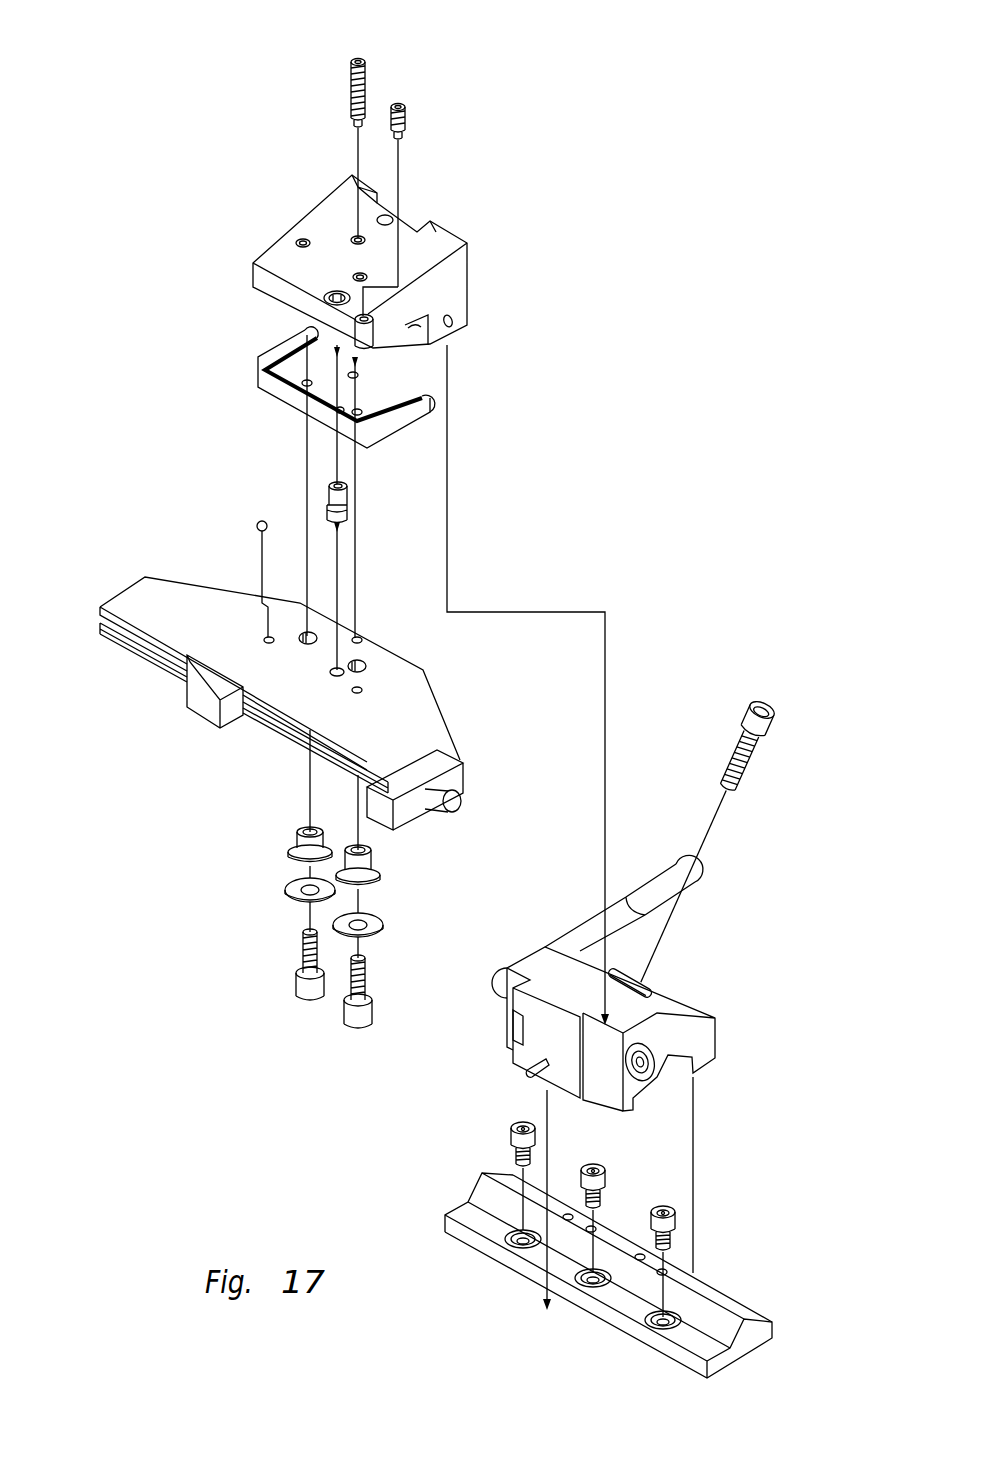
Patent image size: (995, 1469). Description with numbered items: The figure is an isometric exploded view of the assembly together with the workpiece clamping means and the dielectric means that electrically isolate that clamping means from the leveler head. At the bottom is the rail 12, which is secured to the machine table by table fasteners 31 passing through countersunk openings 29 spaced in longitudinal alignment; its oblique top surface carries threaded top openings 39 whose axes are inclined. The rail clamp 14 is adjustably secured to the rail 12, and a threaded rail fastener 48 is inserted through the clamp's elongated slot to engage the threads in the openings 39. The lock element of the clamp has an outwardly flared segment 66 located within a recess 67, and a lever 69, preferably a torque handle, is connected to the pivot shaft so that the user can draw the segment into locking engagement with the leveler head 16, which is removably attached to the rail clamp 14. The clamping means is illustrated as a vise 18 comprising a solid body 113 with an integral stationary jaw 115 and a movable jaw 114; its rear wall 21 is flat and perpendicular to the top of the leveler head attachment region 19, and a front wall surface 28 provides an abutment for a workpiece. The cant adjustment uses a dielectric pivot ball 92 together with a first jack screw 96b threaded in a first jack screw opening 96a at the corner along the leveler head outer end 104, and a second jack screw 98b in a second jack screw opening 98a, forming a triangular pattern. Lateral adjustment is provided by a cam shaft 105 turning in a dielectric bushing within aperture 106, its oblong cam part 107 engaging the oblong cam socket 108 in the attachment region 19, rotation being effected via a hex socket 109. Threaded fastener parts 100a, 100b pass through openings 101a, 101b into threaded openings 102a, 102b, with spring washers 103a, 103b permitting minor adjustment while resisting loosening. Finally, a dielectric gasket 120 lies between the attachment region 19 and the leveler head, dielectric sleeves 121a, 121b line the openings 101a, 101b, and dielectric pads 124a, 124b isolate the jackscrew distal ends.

The rail 12 is at (630, 1243).
The rail clamp 14 is at (612, 960).
The leveler head 16 is at (342, 247).
The vise 18 is at (313, 679).
The leveler head attachment region 19 is at (380, 703).
The vise rear wall 21 is at (360, 640).
The front wall surface 28 is at (293, 744).
The countersunk openings 29 is at (517, 1243).
The table fasteners 31 is at (510, 1120).
The top openings 39 is at (566, 1213).
The threaded rail fastener 48 is at (768, 714).
The outwardly flared segment 66 is at (516, 1020).
The recess 67 is at (520, 1021).
The lever 69 is at (617, 900).
The ball 92 is at (261, 520).
The first jack screw opening 96a is at (370, 316).
The first jack screw 96b is at (400, 105).
The second jack screw opening 98a is at (355, 238).
The second jack screw 98b is at (363, 58).
The threaded fastener part 100a is at (303, 990).
The threaded fastener part 100b is at (370, 1017).
The opening 101a is at (312, 645).
The opening 101b is at (364, 664).
The threaded opening 102a is at (300, 240).
The threaded opening 102b is at (358, 277).
The spring washer 103a is at (300, 888).
The spring washer 103b is at (380, 925).
The leveler head outer end 104 is at (253, 284).
The cam shaft 105 is at (343, 498).
The aperture 106 is at (325, 298).
The oblong-shaped cam part 107 is at (343, 517).
The oblong cam socket 108 is at (332, 676).
The hex socket 109 is at (338, 484).
The solid body 113 is at (165, 611).
The movable jaw 114 is at (198, 710).
The stationary jaw 115 is at (396, 780).
The dielectric gasket 120 is at (250, 372).
The dielectric sleeve 121a is at (303, 838).
The dielectric sleeve 121b is at (367, 869).
The dielectric pad 124a is at (359, 636).
The dielectric pad 124b is at (373, 690).